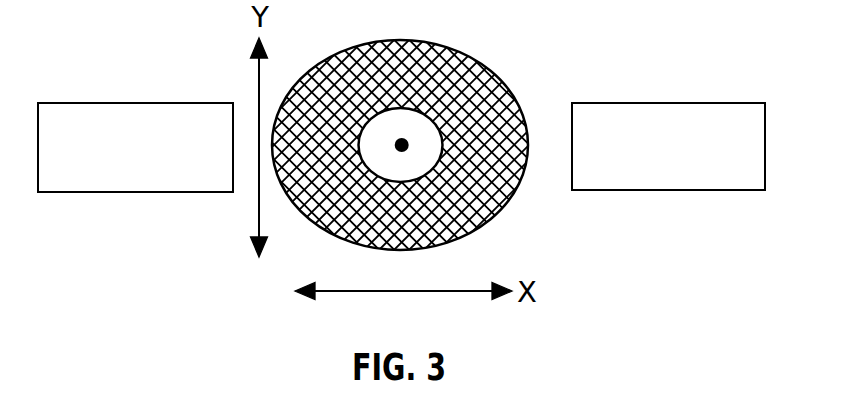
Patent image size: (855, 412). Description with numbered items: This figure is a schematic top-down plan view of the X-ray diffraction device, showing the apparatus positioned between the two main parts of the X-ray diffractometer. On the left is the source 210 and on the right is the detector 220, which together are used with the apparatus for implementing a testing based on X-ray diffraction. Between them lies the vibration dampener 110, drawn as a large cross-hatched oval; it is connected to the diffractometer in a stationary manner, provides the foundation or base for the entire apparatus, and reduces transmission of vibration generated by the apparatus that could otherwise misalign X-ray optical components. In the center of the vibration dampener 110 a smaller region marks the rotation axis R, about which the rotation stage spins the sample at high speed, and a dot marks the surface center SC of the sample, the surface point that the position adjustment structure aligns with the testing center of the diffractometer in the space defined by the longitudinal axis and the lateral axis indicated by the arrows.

The vibration dampener 110 is at (383, 227).
The source 210 is at (115, 178).
The detector 220 is at (648, 178).
The rotation axis R is at (370, 158).
The surface center SC is at (402, 145).